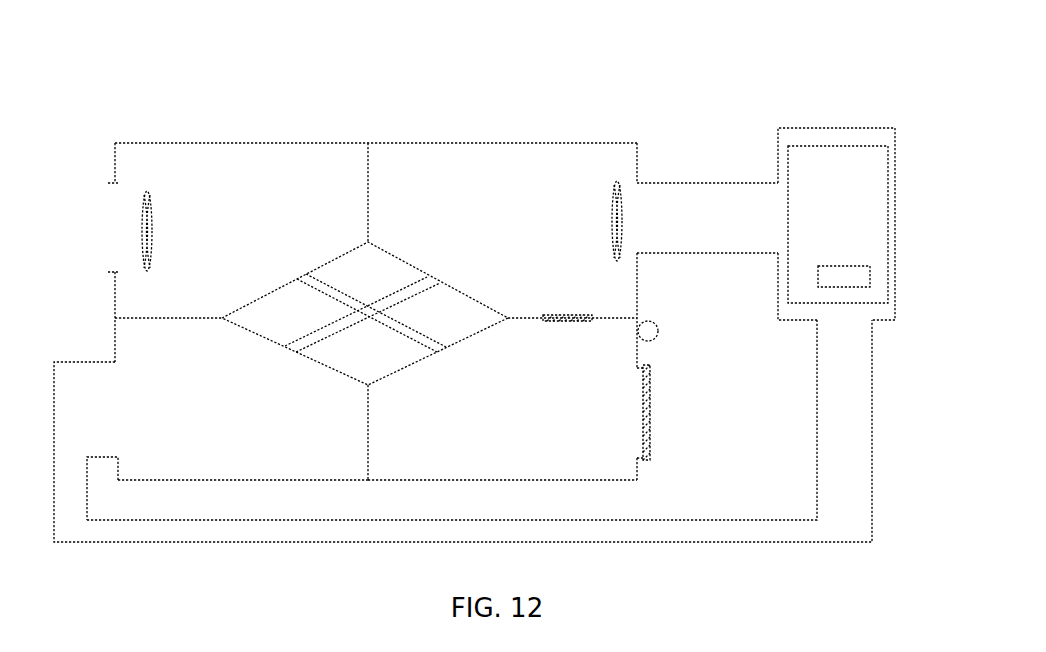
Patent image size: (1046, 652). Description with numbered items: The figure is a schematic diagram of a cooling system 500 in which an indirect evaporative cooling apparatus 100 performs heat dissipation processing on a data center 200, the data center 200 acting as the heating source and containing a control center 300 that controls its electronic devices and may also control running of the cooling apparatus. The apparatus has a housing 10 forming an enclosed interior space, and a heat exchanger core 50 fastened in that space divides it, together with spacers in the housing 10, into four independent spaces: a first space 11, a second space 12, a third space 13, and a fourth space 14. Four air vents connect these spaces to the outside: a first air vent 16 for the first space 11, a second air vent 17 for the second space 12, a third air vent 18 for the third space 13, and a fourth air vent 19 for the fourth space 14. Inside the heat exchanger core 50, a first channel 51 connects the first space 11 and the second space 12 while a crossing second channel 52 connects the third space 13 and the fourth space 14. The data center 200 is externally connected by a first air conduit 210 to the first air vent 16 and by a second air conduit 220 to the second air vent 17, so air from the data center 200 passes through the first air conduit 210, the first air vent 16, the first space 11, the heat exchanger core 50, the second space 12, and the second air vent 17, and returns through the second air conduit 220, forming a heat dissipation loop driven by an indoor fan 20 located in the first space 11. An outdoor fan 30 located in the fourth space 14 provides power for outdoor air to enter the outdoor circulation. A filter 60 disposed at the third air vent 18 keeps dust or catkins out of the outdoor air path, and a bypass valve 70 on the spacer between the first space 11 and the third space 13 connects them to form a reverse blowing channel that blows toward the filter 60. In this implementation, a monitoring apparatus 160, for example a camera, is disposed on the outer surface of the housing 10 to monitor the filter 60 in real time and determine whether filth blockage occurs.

The housing 10 is at (407, 143).
The first space 11 is at (500, 162).
The second space 12 is at (255, 450).
The third space 13 is at (457, 432).
The fourth space 14 is at (245, 170).
The first air vent 16 is at (640, 230).
The second air vent 17 is at (121, 415).
The third air vent 18 is at (643, 410).
The fourth air vent 19 is at (112, 228).
The indoor fan 20 is at (613, 200).
The outdoor fan 30 is at (153, 207).
The heat exchanger core 50 is at (375, 255).
The first channel 51 is at (430, 275).
The second channel 52 is at (448, 348).
The filter 60 is at (650, 408).
The bypass valve 70 is at (567, 316).
The indirect evaporative cooling apparatus 100 is at (625, 137).
The monitoring apparatus 160 is at (656, 328).
The data center 200 is at (793, 135).
The first air conduit 210 is at (690, 205).
The second air conduit 220 is at (863, 413).
The control center 300 is at (863, 283).
The cooling system 500 is at (668, 50).